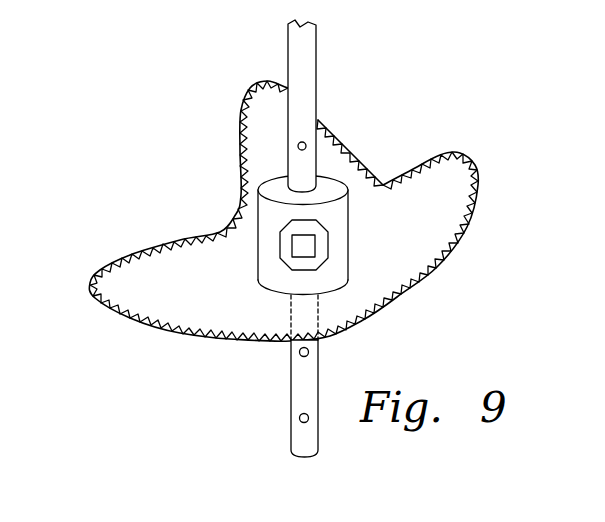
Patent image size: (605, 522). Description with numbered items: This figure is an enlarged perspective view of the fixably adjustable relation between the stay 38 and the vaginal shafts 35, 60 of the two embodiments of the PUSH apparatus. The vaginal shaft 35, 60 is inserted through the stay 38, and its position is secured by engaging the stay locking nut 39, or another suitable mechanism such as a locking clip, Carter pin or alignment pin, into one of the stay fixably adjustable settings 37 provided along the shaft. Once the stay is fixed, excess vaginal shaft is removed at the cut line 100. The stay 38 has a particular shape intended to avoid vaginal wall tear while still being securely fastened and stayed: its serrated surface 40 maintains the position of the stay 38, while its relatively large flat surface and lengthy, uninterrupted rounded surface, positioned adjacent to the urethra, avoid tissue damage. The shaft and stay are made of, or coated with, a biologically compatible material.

The vaginal shaft 35 is at (367, 106).
The vaginal shaft 60 is at (302, 106).
The stay fixably adjustable settings 37 is at (306, 146).
The stay 38 is at (390, 260).
The stay locking nut 39 is at (285, 248).
The serrated surface 40 is at (480, 228).
The cut line 100 is at (317, 295).